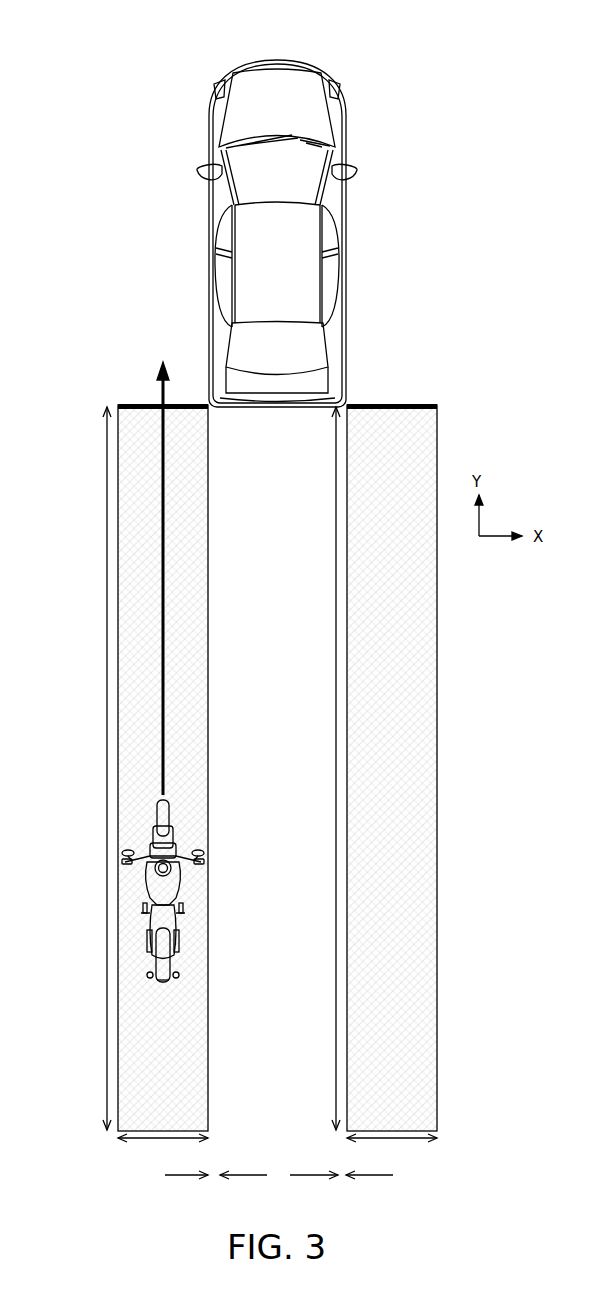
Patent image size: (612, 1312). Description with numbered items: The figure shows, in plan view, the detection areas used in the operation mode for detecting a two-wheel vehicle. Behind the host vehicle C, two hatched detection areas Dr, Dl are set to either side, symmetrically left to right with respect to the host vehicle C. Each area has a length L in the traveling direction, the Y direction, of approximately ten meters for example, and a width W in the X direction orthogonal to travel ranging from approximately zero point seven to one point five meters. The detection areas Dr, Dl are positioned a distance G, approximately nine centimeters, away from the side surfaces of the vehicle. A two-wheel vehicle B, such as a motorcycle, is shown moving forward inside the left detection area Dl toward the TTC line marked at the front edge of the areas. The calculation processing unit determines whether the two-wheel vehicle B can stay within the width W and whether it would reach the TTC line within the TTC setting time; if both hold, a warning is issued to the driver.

The host vehicle C is at (277, 60).
The two-wheel vehicle B is at (181, 889).
The left detection area Dl is at (208, 700).
The right detection area Dr is at (437, 700).
The Time to Collision line TTC is at (272, 409).
The length of detection area in traveling direction L is at (212, 768).
The width of detection area W is at (277, 1150).
The gap from vehicle side surface G is at (279, 1188).